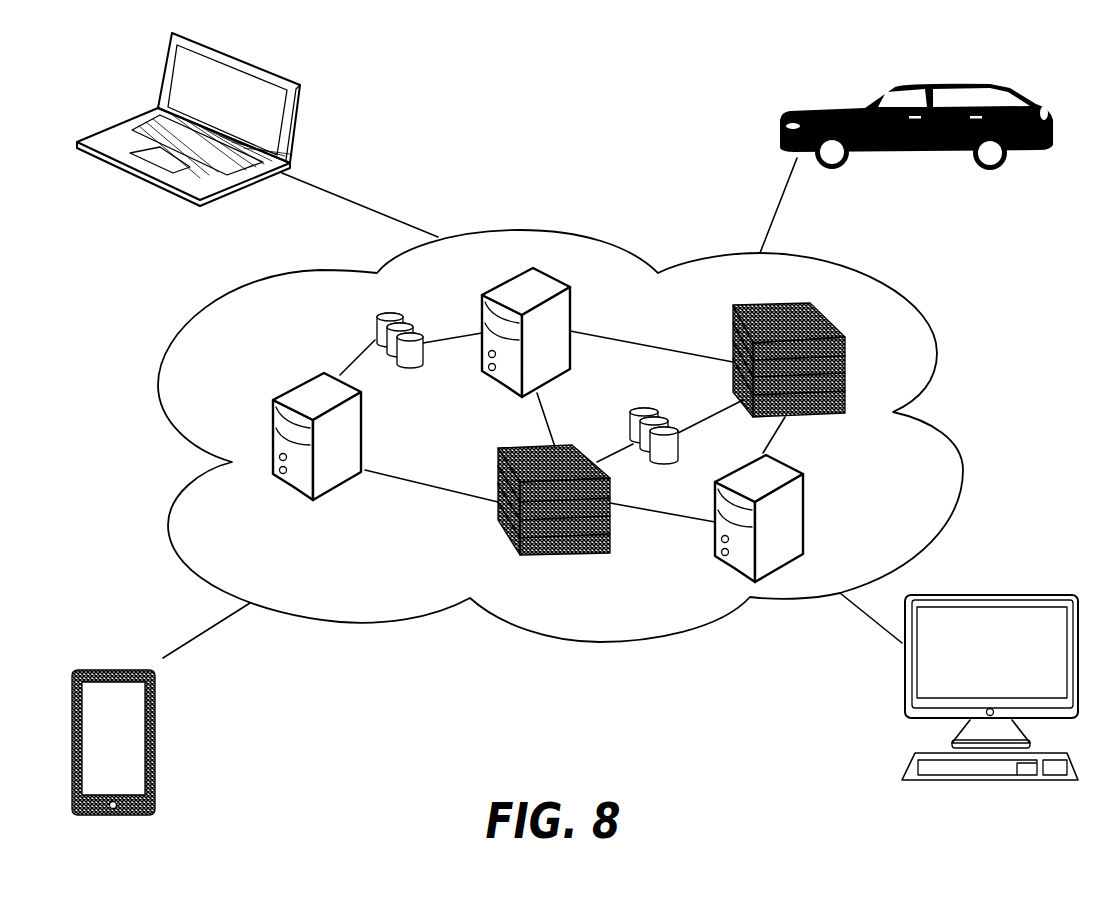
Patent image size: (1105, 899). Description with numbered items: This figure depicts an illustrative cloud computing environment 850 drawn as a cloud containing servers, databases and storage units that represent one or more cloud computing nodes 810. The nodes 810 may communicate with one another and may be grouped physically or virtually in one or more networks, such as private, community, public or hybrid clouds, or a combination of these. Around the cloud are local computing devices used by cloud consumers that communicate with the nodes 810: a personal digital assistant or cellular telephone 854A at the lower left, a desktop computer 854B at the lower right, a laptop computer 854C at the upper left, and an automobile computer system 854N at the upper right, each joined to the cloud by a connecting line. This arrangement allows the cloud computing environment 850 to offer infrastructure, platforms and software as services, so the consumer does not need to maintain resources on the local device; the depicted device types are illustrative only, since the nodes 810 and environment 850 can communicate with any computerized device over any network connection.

The cloud computing nodes 810 is at (925, 458).
The cloud computing environment 850 is at (193, 313).
The personal digital assistant (PDA) or cellular telephone 854A is at (113, 678).
The desktop computer 854B is at (1032, 595).
The laptop computer 854C is at (280, 78).
The automobile computer system 854N is at (915, 80).